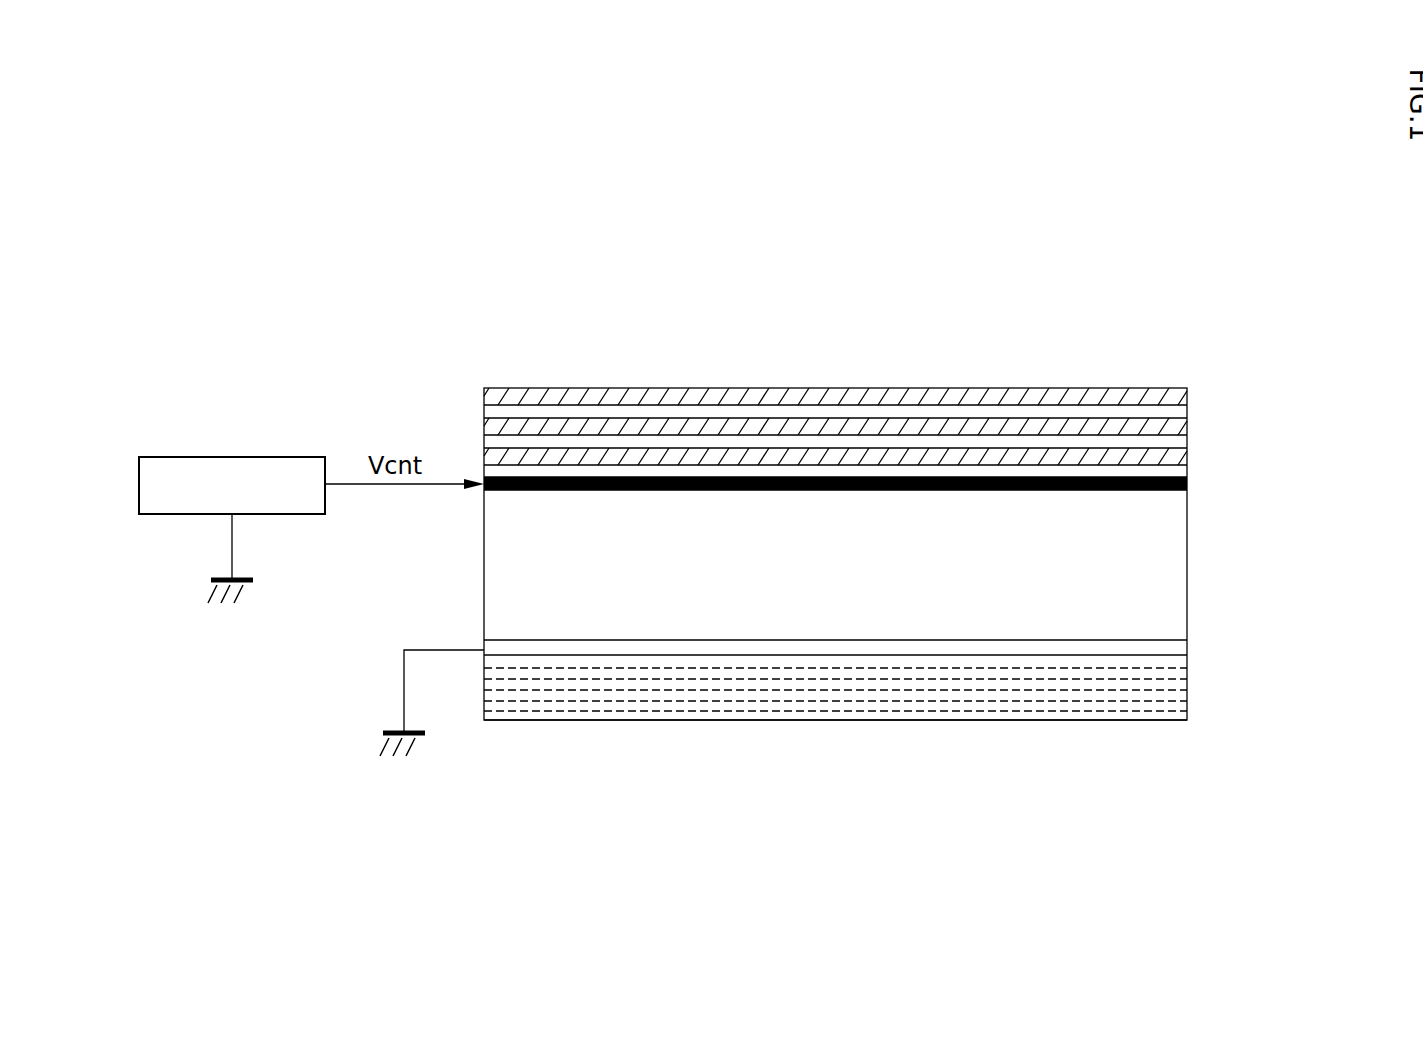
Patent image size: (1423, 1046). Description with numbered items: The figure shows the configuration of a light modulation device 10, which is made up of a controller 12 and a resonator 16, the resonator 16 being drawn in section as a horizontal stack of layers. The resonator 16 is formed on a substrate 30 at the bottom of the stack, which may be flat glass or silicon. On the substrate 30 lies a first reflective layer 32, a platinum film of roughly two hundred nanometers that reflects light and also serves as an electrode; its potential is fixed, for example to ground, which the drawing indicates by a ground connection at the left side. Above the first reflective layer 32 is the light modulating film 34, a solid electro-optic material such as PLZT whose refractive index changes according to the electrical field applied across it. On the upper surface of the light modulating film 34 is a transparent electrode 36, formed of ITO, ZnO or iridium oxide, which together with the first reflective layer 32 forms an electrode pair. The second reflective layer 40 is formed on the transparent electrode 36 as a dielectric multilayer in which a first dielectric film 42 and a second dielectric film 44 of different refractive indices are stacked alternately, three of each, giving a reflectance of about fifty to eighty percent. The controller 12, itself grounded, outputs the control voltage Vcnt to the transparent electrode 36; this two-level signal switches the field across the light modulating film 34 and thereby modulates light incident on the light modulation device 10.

The light modulation device 10 is at (679, 870).
The controller 12 is at (139, 486).
The resonator 16 is at (1010, 721).
The substrate 30 is at (1173, 692).
The first reflective layer 32 is at (1173, 647).
The light modulating film 34 is at (1173, 562).
The transparent electrode 36 is at (835, 491).
The second reflective layer 40 is at (918, 364).
The first dielectric film 42 is at (1187, 410).
The second dielectric film 44 is at (1187, 393).